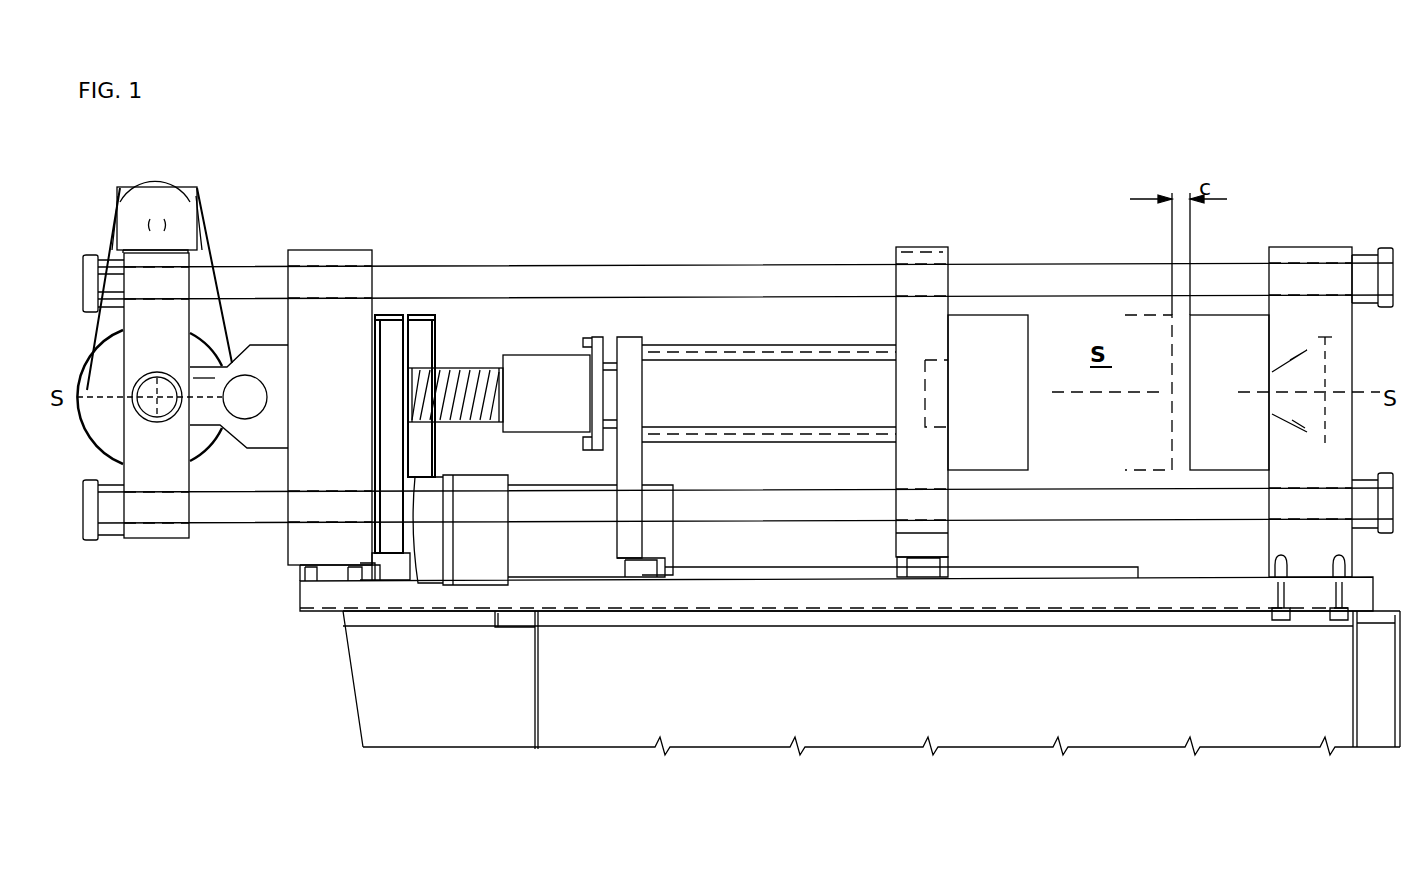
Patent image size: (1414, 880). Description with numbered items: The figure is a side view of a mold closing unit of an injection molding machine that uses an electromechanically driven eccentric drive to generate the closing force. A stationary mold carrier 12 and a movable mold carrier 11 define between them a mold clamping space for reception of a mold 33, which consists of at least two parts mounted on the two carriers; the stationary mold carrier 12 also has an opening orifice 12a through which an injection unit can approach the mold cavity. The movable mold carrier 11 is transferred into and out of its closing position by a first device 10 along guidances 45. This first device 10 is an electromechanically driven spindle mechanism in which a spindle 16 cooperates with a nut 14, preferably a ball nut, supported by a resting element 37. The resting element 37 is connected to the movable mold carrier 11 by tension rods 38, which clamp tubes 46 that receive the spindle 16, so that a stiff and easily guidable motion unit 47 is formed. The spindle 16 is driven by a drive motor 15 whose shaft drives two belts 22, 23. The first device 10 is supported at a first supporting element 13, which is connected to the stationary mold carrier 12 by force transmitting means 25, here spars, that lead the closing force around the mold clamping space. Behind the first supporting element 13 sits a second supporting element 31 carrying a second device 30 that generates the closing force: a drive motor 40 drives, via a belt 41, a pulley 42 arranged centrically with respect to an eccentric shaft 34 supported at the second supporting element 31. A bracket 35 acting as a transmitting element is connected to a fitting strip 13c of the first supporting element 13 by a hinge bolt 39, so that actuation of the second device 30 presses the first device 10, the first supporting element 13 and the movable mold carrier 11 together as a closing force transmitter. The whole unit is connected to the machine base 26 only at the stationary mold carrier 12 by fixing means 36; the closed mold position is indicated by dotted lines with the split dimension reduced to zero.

The first device 10 is at (466, 322).
The movable mold carrier 11 is at (915, 313).
The stationary mold carrier 12 is at (1298, 313).
The opening orifice 12a is at (1365, 390).
The first supporting element 13 is at (320, 313).
The fitting strip 13c is at (273, 368).
The nut 14 is at (553, 408).
The drive motor 15 is at (568, 549).
The spindle 16 is at (445, 360).
The belt 22 is at (388, 535).
The belt 23 is at (422, 337).
The force transmitting means 25 is at (240, 512).
The machine base 26 is at (870, 683).
The second device 30 is at (207, 227).
The second supporting element 31 is at (159, 533).
The mold 33 is at (1003, 408).
The eccentric shaft 34 is at (160, 408).
The bracket 35 is at (202, 383).
The fixing means 36 is at (1263, 608).
The resting element 37 is at (625, 468).
The tension rods 38 is at (788, 435).
The hinge bolt 39 is at (253, 398).
The drive motor 40 is at (125, 195).
The belt 41 is at (204, 250).
The pulley 42 is at (202, 438).
The guidances 45 is at (790, 573).
The tubes 46 is at (702, 377).
The motion unit 47 is at (769, 340).